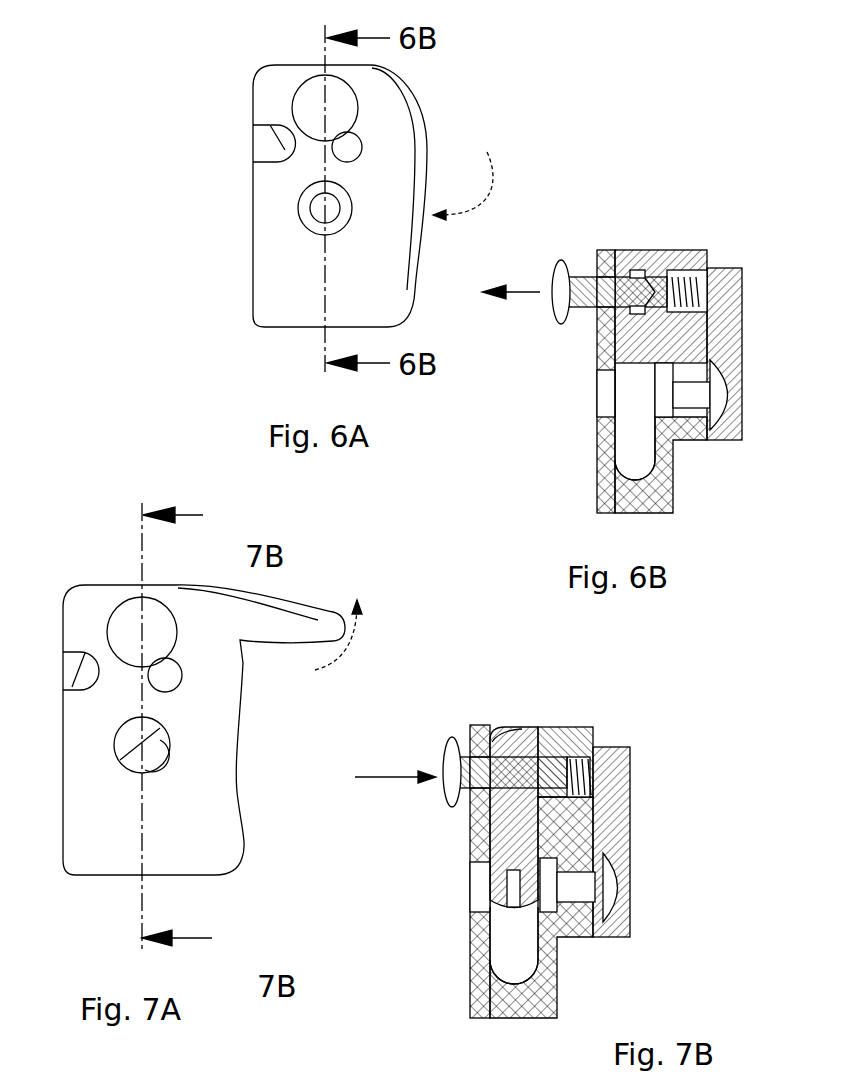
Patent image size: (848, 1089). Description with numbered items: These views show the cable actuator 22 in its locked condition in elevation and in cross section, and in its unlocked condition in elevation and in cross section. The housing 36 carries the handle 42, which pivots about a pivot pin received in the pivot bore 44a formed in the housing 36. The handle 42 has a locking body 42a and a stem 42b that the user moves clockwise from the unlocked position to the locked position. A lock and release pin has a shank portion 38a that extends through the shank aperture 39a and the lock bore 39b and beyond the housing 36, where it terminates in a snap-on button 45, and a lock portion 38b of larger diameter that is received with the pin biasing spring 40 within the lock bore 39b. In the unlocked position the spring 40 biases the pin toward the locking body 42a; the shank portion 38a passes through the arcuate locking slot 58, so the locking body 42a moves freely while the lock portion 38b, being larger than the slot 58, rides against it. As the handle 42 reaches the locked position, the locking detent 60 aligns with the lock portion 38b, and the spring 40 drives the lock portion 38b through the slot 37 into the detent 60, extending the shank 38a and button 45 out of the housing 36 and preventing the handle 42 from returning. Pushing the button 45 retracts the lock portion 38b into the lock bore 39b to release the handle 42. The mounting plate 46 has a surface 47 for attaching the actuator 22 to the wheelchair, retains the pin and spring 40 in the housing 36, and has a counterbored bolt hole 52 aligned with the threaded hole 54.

In FIG. 6A, the cable actuator 22 is at (350, 174).
In FIG. 6A, the housing 36 is at (260, 233).
In FIG. 6B, the housing 36 is at (660, 500).
In FIG. 7A, the housing 36 is at (117, 808).
In FIG. 7B, the housing 36 is at (547, 985).
In FIG. 6B, the slot 37 is at (635, 432).
In FIG. 7B, the slot 37 is at (503, 942).
In FIG. 6B, the shank portion 38a is at (590, 303).
In FIG. 7B, the shank portion 38a is at (460, 775).
In FIG. 6B, the lock portion 38b is at (641, 271).
In FIG. 7B, the lock portion 38b is at (548, 758).
In FIG. 6B, the shank aperture 39a is at (597, 278).
In FIG. 7B, the shank aperture 39a is at (470, 777).
In FIG. 6B, the lock bore 39b is at (693, 290).
In FIG. 7B, the lock bore 39b is at (580, 787).
In FIG. 6B, the pin biasing spring 40 is at (692, 308).
In FIG. 7B, the pin biasing spring 40 is at (586, 758).
In FIG. 6A, the handle 42 is at (452, 132).
In FIG. 6B, the locking body 42a is at (637, 250).
In FIG. 7B, the locking body 42a is at (503, 863).
In FIG. 6A, the stem 42b is at (417, 253).
In FIG. 7A, the stem 42b is at (303, 630).
In FIG. 6A, the pivot bore 44a is at (348, 147).
In FIG. 7A, the pivot bore 44a is at (172, 675).
In FIG. 6A, the snap-on button 45 is at (315, 110).
In FIG. 6B, the snap-on button 45 is at (560, 313).
In FIG. 7A, the snap-on button 45 is at (127, 618).
In FIG. 7B, the snap-on button 45 is at (448, 797).
In FIG. 6B, the mounting plate 46 is at (764, 385).
In FIG. 7B, the mounting plate 46 is at (633, 763).
In FIG. 6B, the surface 47 is at (737, 298).
In FIG. 6B, the bolt hole 52 is at (725, 398).
In FIG. 6A, the threaded hole 54 is at (317, 233).
In FIG. 7A, the threaded hole 54 is at (160, 753).
In FIG. 7B, the locking slot 58 is at (513, 770).
In FIG. 6B, the locking detent 60 is at (648, 287).